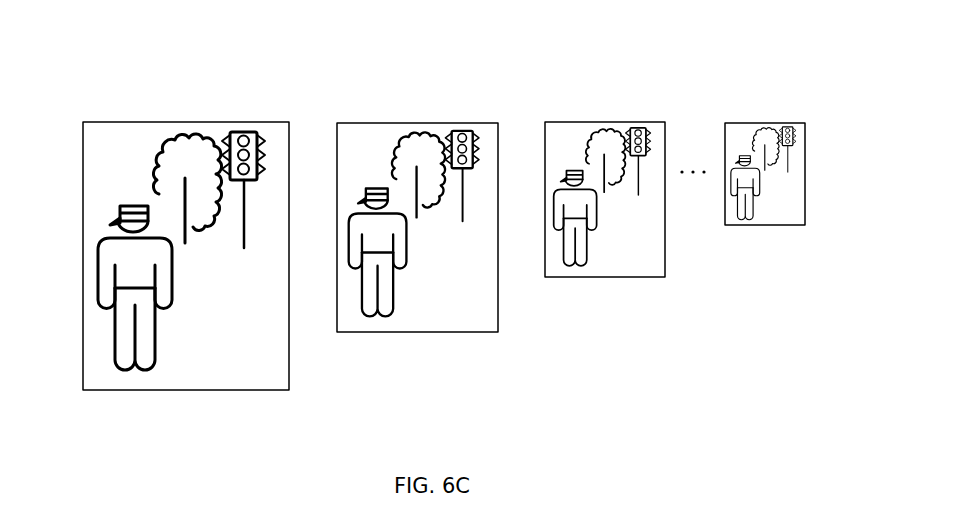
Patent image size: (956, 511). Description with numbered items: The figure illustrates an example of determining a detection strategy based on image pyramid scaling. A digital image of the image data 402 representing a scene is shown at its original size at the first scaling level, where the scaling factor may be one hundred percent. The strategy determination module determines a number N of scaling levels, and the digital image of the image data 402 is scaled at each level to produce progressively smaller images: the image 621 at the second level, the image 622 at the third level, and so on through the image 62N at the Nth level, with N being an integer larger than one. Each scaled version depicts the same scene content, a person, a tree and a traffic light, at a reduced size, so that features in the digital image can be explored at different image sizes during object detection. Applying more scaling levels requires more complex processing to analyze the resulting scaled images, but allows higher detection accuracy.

The image data 402 is at (138, 115).
The image 621 is at (423, 117).
The image 622 is at (613, 113).
The image 62N is at (797, 115).